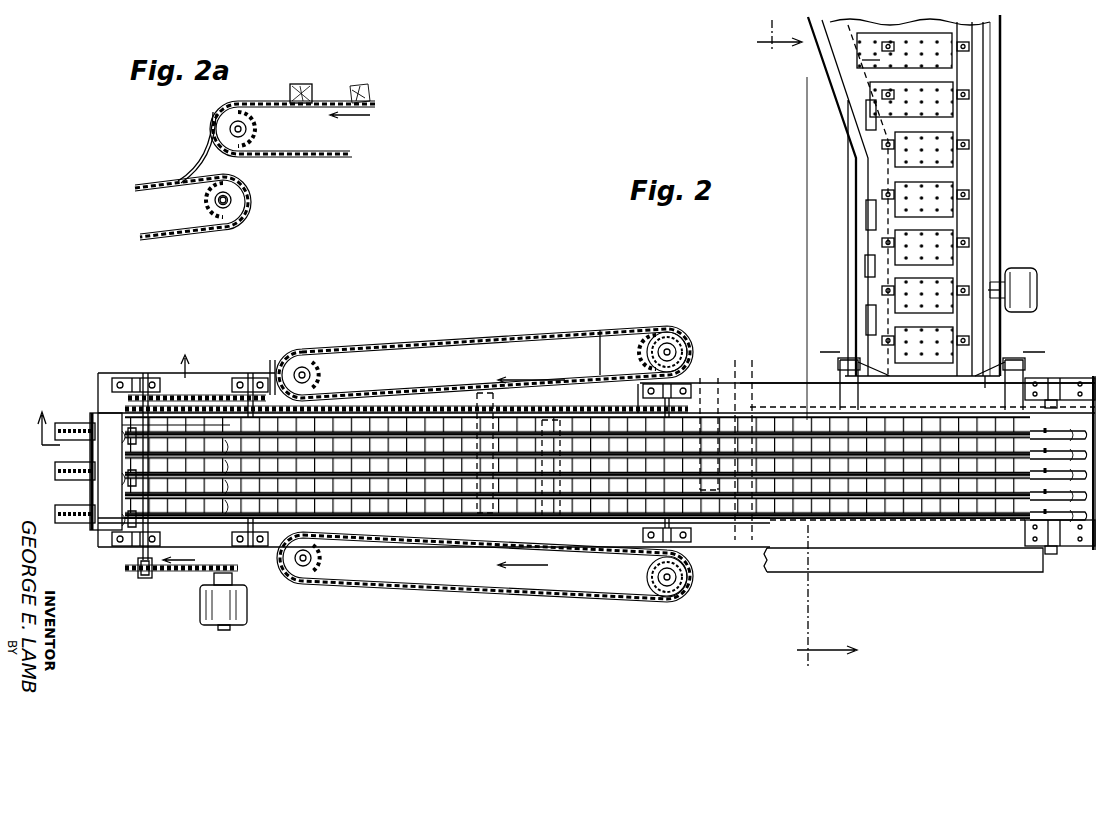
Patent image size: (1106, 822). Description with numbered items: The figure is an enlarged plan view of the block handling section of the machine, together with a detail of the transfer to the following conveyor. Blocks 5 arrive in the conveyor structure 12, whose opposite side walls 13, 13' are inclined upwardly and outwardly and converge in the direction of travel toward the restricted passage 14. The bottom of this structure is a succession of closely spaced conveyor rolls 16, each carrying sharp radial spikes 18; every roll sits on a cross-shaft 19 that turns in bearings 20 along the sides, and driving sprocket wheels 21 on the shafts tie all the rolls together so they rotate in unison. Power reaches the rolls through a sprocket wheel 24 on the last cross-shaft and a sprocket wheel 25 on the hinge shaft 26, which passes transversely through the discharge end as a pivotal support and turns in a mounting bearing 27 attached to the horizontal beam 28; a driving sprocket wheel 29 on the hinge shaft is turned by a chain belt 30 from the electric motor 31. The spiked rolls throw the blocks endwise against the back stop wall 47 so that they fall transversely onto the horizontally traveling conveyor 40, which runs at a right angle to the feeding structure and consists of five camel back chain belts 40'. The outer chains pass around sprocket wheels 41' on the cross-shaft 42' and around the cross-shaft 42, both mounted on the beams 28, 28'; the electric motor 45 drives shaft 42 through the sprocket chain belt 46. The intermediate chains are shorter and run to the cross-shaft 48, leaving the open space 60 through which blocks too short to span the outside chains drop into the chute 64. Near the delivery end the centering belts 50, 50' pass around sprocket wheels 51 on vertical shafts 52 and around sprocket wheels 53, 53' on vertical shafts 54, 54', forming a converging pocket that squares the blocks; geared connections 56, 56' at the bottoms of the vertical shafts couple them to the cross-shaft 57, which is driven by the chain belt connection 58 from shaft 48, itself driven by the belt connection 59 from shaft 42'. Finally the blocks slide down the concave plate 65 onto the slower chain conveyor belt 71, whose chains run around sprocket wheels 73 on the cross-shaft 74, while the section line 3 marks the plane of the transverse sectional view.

In FIG. 2, the section line 3- 3 is at (807, 345).
In FIG. 2A, the blocks 5 is at (372, 90).
In FIG. 2, the blocks 5 is at (737, 400).
In FIG. 2, the conveyor structure 12 is at (1017, 105).
In FIG. 2, the side wall 13 is at (807, 73).
In FIG. 2, the side wall 13' is at (1017, 199).
In FIG. 2, the restricted passage 14 is at (960, 225).
In FIG. 2, the conveyor rolls 16 is at (885, 162).
In FIG. 2, the spikes 18 is at (885, 110).
In FIG. 2, the cross-shaft 19 is at (862, 260).
In FIG. 2, the bearings 20 is at (975, 192).
In FIG. 2, the driving sprocket wheels 21 is at (875, 235).
In FIG. 2, the sprocket wheel 24 is at (866, 342).
In FIG. 2, the sprocket wheel 25 is at (870, 378).
In FIG. 2, the hinge shaft 26 is at (835, 362).
In FIG. 2, the mounting bearing 27 is at (845, 358).
In FIG. 2, the horizontal beam 28 is at (907, 483).
In FIG. 2, the horizontal beam 28' is at (615, 334).
In FIG. 2, the driving sprocket wheel 29 is at (985, 378).
In FIG. 2, the chain belt 30 is at (1000, 318).
In FIG. 2, the electric motor 31 is at (1035, 282).
In FIG. 2, the horizontally traveling conveyor 40 is at (577, 517).
In FIG. 2A, the camel back chain belts 40' is at (330, 77).
In FIG. 2A, the sprocket wheels 41' is at (276, 129).
In FIG. 2, the sprocket wheels 41' is at (176, 471).
In FIG. 2, the cross-shaft 42 is at (1058, 508).
In FIG. 2A, the cross-shaft 42' is at (292, 146).
In FIG. 2, the cross-shaft 42' is at (149, 506).
In FIG. 2, the electric motor 45 is at (212, 625).
In FIG. 2, the sprocket chain belt 46 is at (172, 575).
In FIG. 2, the back stop wall 47 is at (948, 572).
In FIG. 2, the cross-shaft 48 is at (276, 362).
In FIG. 2, the centering belt 50 is at (485, 567).
In FIG. 2, the centering belt 50' is at (484, 348).
In FIG. 2, the sprocket wheels 51 is at (675, 345).
In FIG. 2, the vertical shaft 52 is at (680, 350).
In FIG. 2, the sprocket wheel 53 is at (346, 580).
In FIG. 2, the sprocket wheel 53' is at (347, 348).
In FIG. 2, the vertical shaft 54 is at (314, 588).
In FIG. 2, the vertical shaft 54' is at (336, 374).
In FIG. 2, the geared connections 56 is at (695, 468).
In FIG. 2, the geared connection 56' is at (656, 328).
In FIG. 2, the cross-shaft 57 is at (675, 548).
In FIG. 2, the chain belt connection 58 is at (418, 408).
In FIG. 2, the belt connection 59 is at (225, 398).
In FIG. 2, the open space 60 is at (140, 575).
In FIG. 2, the chute 64 is at (135, 296).
In FIG. 2A, the concave plate 65 is at (204, 150).
In FIG. 2, the concave plate 65 is at (60, 415).
In FIG. 2A, the chain conveyor belt 71 is at (145, 182).
In FIG. 2, the chain conveyor belt 71 is at (62, 462).
In FIG. 2A, the sprocket wheels 73 is at (238, 208).
In FIG. 2A, the cross-shaft 74 is at (226, 210).
In FIG. 2, the cross-shaft 74 is at (120, 485).